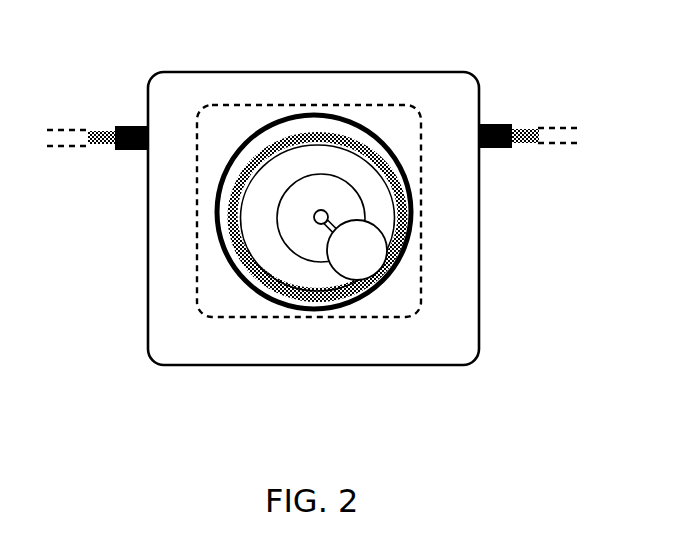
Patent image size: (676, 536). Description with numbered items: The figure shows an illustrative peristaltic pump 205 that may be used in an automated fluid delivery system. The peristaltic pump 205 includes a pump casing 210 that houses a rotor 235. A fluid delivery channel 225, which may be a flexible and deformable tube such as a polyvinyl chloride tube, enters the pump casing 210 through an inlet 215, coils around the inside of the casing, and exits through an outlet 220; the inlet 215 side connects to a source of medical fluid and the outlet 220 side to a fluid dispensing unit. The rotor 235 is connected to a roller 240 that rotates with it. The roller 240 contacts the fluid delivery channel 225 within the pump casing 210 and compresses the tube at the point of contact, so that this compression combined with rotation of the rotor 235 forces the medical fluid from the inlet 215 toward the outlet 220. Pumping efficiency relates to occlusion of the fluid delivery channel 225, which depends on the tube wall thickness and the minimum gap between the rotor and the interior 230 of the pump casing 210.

The peristaltic pump 205 is at (314, 194).
The pump casing 210 is at (409, 78).
The inlet 215 is at (488, 123).
The outlet 220 is at (140, 126).
The fluid delivery channel 225 is at (92, 130).
The interior 230 is at (402, 159).
The rotor 235 is at (303, 238).
The roller 240 is at (357, 263).